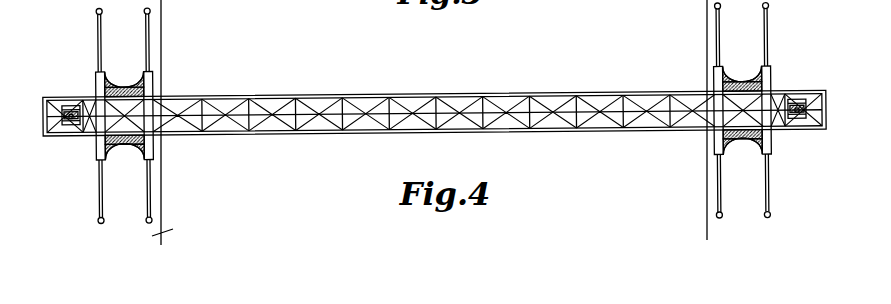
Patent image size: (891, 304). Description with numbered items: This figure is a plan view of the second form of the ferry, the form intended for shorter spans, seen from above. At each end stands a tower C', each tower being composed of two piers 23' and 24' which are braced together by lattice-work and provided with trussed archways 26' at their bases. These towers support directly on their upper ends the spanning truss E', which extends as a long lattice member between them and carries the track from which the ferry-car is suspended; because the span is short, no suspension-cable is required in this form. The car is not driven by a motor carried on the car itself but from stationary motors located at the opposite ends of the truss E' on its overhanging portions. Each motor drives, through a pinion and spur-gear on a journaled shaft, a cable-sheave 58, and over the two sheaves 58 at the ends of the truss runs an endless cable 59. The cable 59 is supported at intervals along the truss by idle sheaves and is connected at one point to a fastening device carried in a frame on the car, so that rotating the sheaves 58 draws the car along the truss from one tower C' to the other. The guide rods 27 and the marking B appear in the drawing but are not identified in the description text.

The guide rods 27 is at (433, 113).
The pier 23' is at (412, 81).
The pier 24' is at (413, 148).
The trussed archway 26' is at (434, 114).
The tower C' is at (454, 107).
The cable-sheave 58 is at (63, 130).
The endless cable 59 is at (306, 119).
The spanning truss E' is at (434, 100).
The section line B is at (712, 194).